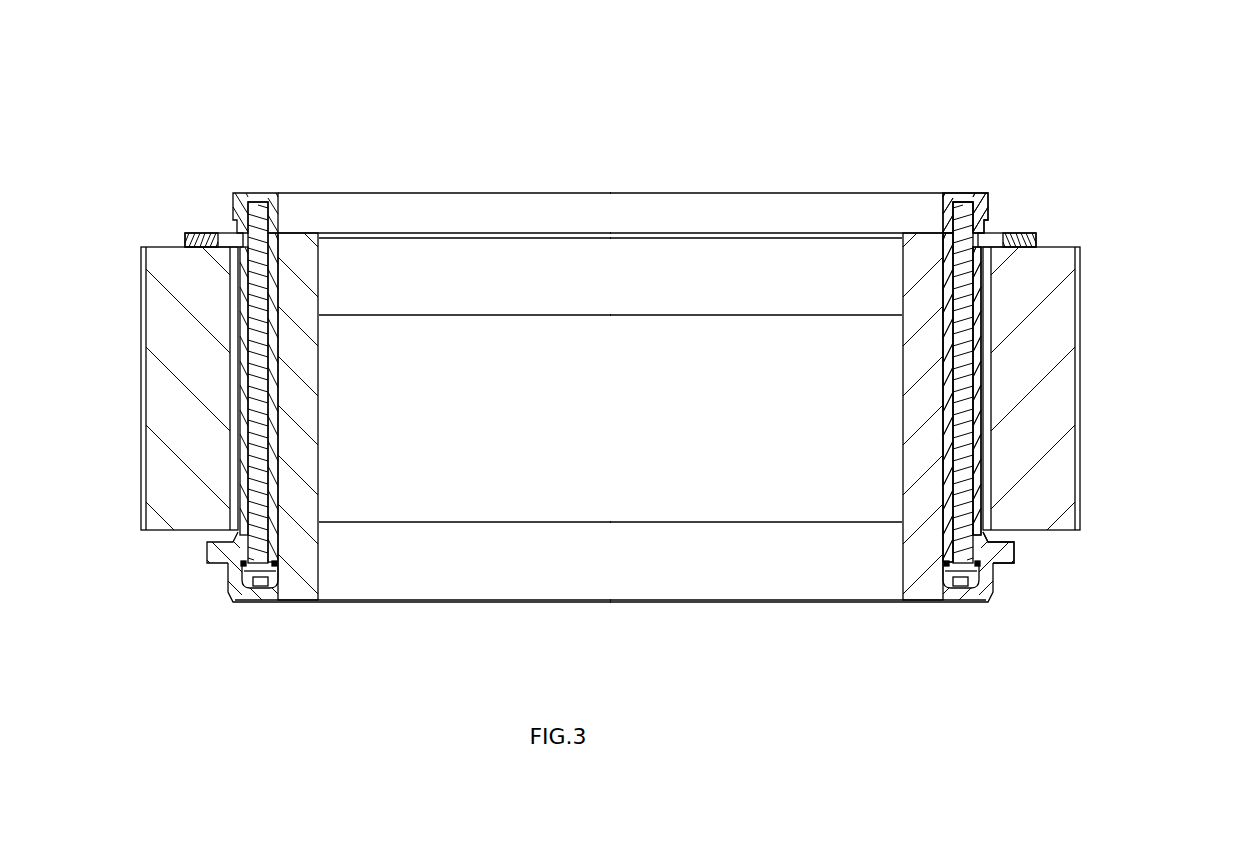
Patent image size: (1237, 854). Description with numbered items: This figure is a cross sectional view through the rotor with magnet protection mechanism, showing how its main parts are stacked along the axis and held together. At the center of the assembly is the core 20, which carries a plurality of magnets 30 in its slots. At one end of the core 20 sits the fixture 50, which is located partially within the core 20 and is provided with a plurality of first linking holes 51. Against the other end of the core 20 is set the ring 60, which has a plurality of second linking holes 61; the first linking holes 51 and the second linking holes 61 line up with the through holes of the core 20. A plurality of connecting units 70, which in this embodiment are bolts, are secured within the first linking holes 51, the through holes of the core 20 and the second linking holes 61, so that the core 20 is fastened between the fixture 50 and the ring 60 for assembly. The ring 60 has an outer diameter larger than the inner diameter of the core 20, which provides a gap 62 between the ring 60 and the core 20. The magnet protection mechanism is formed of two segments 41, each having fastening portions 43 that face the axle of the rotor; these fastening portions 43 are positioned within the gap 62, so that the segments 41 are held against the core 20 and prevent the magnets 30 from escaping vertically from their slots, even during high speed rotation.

The core 20 is at (982, 400).
The magnet 30 is at (1053, 288).
The segment 41 is at (193, 233).
The fastening portion 43 is at (222, 235).
The fixture 50 is at (922, 604).
The first linking hole 51 is at (978, 543).
The ring 60 is at (984, 185).
The second linking hole 61 is at (277, 220).
The gap 62 is at (238, 235).
The connecting unit 70 is at (962, 590).